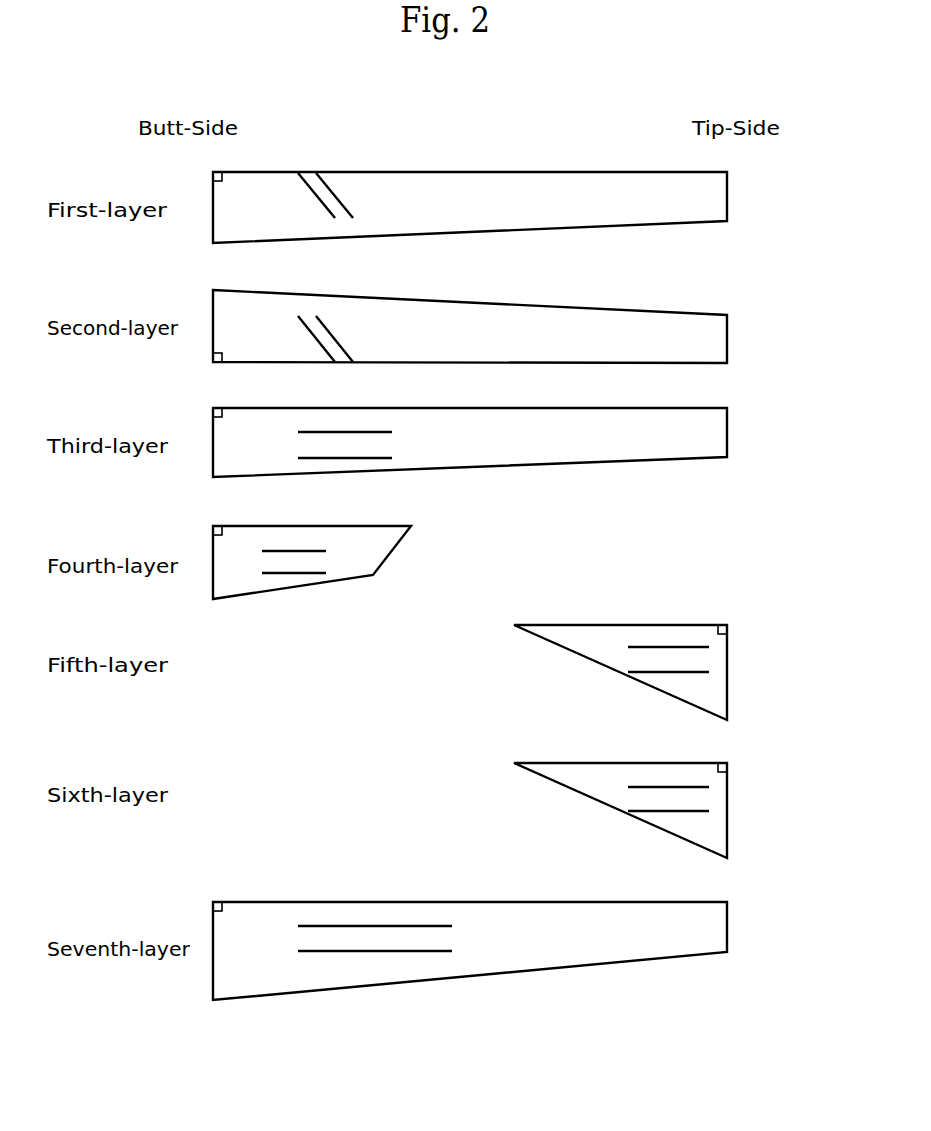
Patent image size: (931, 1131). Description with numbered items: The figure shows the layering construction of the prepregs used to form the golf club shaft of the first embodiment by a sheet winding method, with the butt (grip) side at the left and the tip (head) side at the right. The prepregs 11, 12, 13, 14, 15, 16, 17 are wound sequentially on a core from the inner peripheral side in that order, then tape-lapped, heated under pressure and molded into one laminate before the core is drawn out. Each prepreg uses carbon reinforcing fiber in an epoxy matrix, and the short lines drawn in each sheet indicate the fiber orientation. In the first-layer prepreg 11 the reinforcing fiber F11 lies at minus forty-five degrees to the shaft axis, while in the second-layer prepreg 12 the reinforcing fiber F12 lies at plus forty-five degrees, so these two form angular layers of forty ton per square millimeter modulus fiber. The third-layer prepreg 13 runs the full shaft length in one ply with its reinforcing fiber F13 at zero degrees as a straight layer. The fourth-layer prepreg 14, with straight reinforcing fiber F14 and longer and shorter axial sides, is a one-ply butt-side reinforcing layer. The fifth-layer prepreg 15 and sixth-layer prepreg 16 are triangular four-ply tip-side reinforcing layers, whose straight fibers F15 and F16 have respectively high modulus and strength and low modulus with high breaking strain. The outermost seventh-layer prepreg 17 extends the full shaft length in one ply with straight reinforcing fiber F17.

The prepreg 11 is at (515, 173).
The prepreg 12 is at (515, 312).
The prepreg 13 is at (515, 428).
The prepreg 14 is at (346, 545).
The prepreg 15 is at (665, 626).
The prepreg 16 is at (665, 788).
The prepreg 17 is at (515, 915).
The reinforcing fiber F11 is at (339, 198).
The reinforcing fiber F12 is at (339, 340).
The reinforcing fiber F13 is at (365, 432).
The reinforcing fiber F14 is at (292, 551).
The reinforcing fiber F15 is at (672, 647).
The reinforcing fiber F16 is at (658, 787).
The reinforcing fiber F17 is at (393, 926).